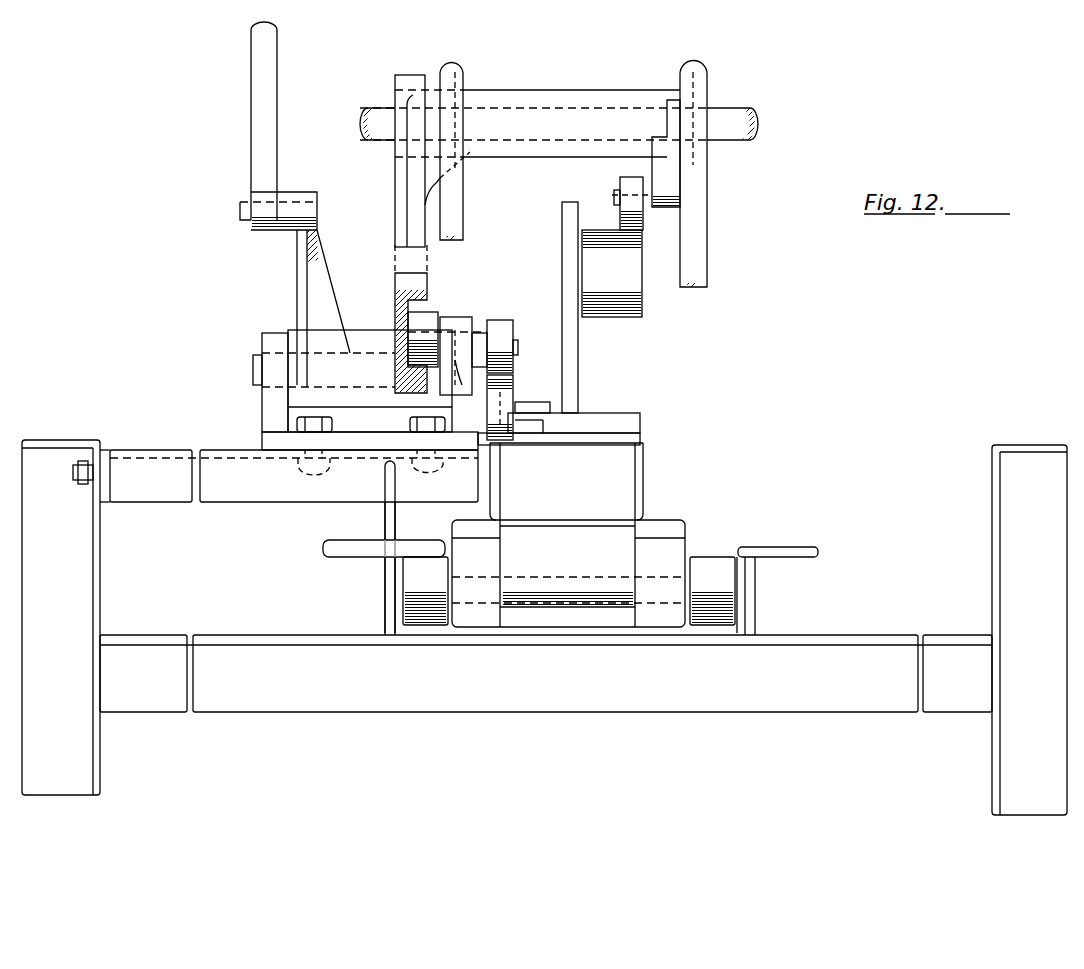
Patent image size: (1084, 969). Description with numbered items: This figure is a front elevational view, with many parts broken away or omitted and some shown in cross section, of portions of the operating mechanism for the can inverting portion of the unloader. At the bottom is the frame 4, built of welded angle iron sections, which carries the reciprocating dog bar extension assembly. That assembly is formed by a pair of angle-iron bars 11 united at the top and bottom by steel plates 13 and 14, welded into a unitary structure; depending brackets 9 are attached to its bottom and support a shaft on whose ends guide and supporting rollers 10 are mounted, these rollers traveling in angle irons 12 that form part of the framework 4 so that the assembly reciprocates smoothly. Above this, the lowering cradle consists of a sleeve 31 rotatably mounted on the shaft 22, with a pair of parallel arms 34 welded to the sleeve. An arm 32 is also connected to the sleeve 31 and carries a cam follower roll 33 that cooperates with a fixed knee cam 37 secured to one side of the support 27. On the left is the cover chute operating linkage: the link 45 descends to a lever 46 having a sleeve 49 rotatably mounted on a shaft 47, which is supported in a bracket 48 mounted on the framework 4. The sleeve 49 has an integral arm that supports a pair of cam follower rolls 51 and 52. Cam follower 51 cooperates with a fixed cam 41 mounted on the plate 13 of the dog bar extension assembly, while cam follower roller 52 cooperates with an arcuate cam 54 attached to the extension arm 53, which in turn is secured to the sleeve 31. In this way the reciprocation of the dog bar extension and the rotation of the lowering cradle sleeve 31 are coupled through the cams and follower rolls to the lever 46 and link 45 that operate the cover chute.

The frame 4 is at (167, 703).
The depending bracket 9 is at (635, 557).
The guide and supporting roller 10 is at (450, 590).
The bar 11 is at (635, 488).
The angle iron 12 is at (418, 551).
The plate 13 is at (642, 438).
The plate 14 is at (612, 524).
The shaft 22 is at (748, 108).
The support 27 is at (580, 366).
The sleeve 31 is at (596, 95).
The arm 32 is at (672, 176).
The cam follower roll 33 is at (619, 180).
The parallel arm 34 is at (456, 211).
The fixed knee cam 37 is at (642, 304).
The fixed cam 41 is at (514, 388).
The link 45 is at (270, 58).
The lever 46 is at (300, 280).
The shaft 47 is at (255, 365).
The bracket 48 is at (262, 405).
The sleeve 49 is at (366, 342).
The cam follower roll 51 is at (510, 321).
The cam follower roller 52 is at (430, 318).
The extension arm 53 is at (400, 197).
The arcuate cam 54 is at (396, 385).